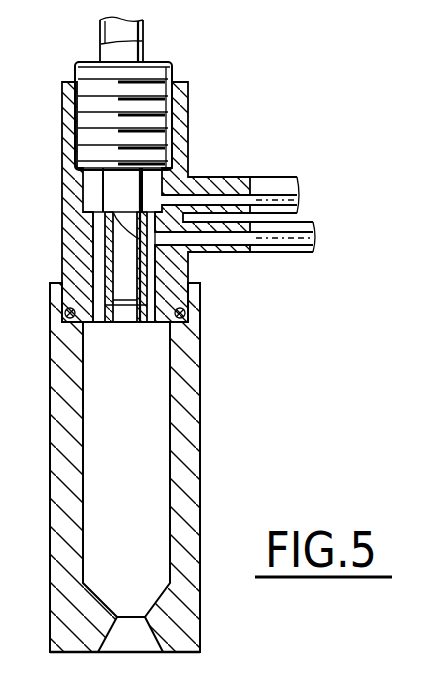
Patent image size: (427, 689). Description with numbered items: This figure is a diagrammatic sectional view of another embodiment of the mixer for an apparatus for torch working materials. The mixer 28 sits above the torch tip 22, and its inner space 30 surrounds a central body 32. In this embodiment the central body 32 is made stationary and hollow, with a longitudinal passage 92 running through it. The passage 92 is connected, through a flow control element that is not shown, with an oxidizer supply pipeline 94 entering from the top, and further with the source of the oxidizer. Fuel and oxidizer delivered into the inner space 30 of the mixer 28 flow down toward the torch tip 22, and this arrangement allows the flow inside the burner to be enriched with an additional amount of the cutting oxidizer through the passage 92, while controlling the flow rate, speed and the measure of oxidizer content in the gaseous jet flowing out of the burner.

The torch tip 22 is at (197, 417).
The mixer 28 is at (73, 205).
The inner space 30 is at (184, 172).
The central body 32 is at (115, 220).
The longitudinal passage 92 is at (123, 302).
The oxidizer supply pipeline 94 is at (129, 36).